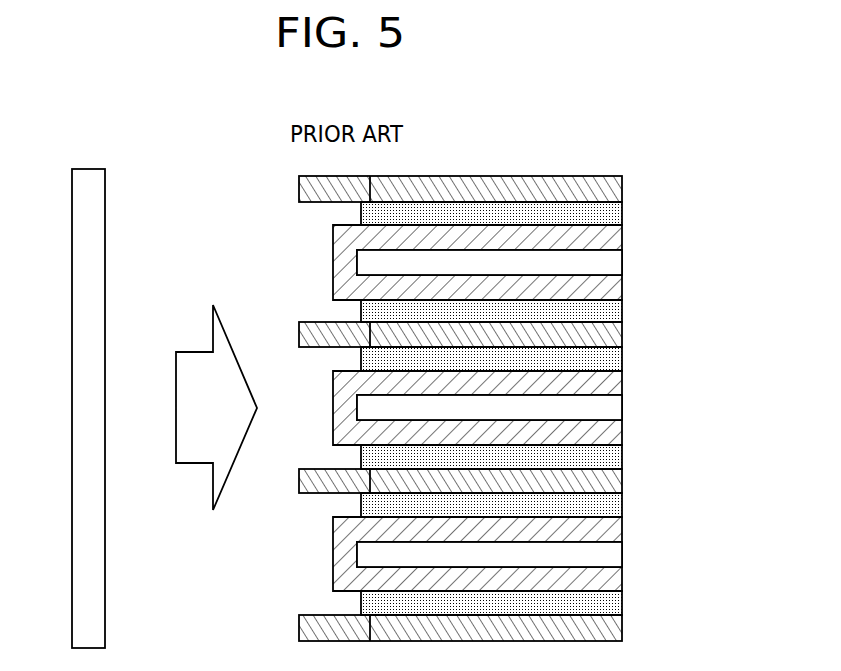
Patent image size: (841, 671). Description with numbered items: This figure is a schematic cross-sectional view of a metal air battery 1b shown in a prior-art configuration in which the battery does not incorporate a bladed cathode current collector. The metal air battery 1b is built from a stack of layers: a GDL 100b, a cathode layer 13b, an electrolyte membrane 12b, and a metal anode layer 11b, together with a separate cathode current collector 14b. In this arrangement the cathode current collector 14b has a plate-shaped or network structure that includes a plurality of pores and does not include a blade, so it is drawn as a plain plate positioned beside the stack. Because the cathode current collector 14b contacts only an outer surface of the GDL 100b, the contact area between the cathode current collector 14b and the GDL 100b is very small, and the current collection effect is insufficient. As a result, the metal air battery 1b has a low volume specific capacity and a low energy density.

The metal air battery 1b is at (604, 152).
The cathode current collector 14b is at (88, 180).
The GDL 100b is at (618, 188).
The cathode layer 13b is at (616, 215).
The electrolyte membrane 12b is at (616, 240).
The metal anode layer 11b is at (612, 264).